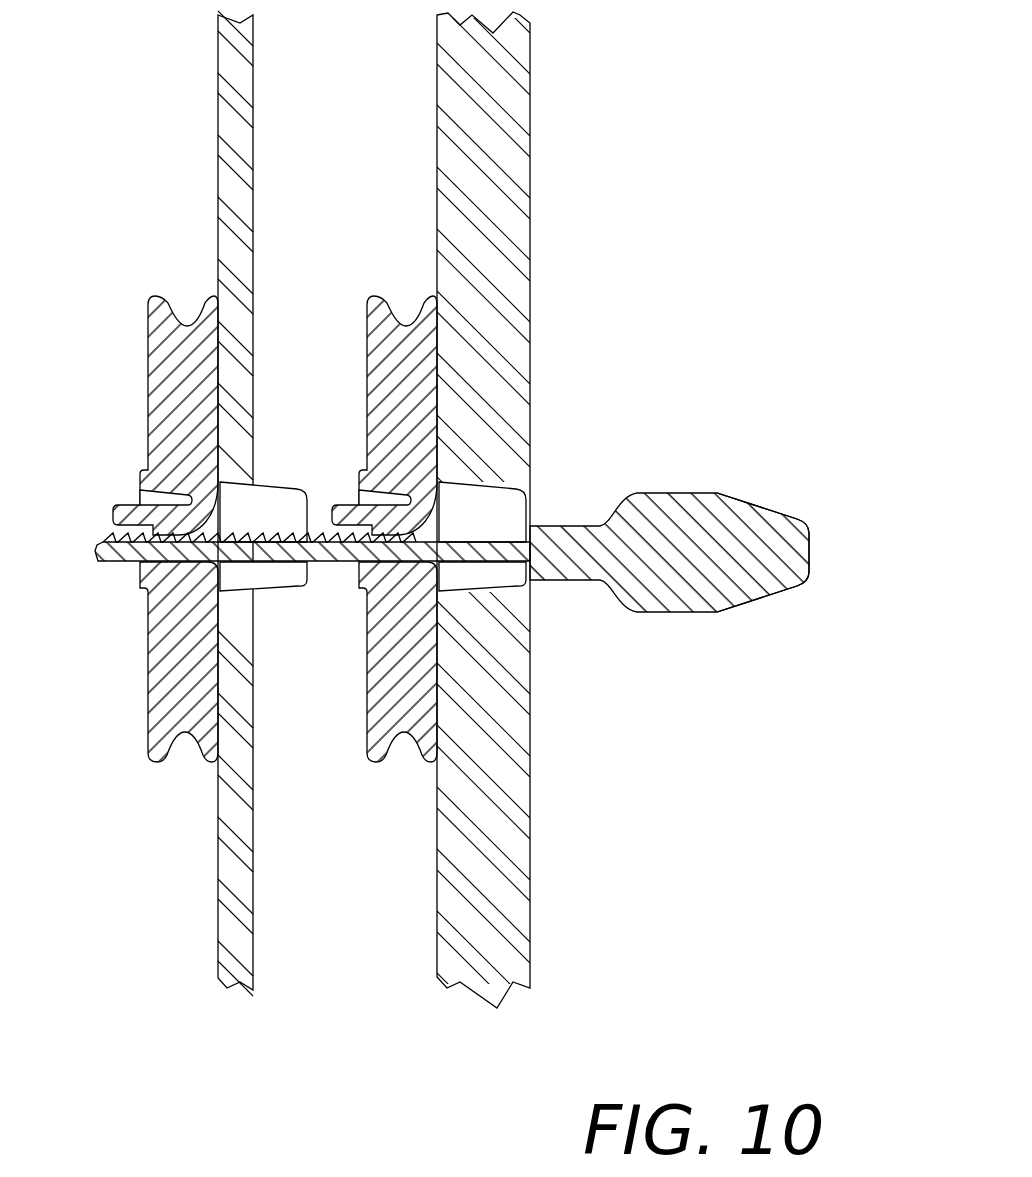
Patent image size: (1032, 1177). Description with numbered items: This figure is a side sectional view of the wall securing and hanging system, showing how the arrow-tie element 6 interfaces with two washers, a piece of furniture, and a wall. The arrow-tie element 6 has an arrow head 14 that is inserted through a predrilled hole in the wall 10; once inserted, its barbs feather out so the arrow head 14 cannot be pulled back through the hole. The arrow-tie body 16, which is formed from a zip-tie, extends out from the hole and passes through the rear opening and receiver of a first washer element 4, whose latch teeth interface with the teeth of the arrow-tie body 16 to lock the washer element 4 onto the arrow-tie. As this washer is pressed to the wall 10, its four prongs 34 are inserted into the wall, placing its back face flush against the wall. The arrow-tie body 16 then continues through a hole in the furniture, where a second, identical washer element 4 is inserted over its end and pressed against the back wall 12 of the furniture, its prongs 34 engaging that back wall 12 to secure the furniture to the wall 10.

The washer element 4 is at (103, 312).
The arrow-tie element 6 is at (682, 438).
The wall 10 is at (500, 249).
The back wall of the furniture 12 is at (249, 182).
The arrow head 14 is at (815, 558).
The arrow-tie body 16 is at (82, 540).
The prongs 34 is at (258, 572).